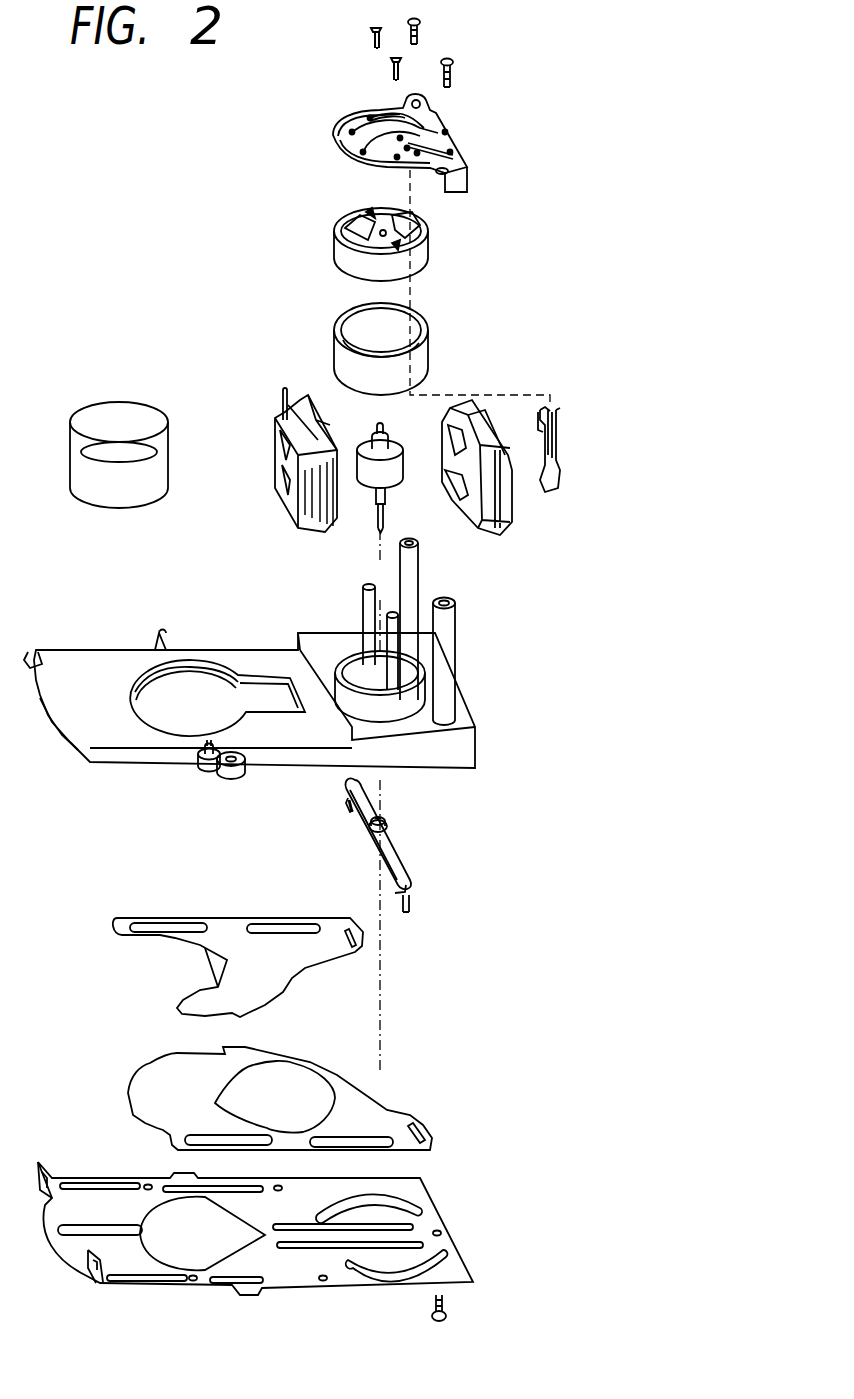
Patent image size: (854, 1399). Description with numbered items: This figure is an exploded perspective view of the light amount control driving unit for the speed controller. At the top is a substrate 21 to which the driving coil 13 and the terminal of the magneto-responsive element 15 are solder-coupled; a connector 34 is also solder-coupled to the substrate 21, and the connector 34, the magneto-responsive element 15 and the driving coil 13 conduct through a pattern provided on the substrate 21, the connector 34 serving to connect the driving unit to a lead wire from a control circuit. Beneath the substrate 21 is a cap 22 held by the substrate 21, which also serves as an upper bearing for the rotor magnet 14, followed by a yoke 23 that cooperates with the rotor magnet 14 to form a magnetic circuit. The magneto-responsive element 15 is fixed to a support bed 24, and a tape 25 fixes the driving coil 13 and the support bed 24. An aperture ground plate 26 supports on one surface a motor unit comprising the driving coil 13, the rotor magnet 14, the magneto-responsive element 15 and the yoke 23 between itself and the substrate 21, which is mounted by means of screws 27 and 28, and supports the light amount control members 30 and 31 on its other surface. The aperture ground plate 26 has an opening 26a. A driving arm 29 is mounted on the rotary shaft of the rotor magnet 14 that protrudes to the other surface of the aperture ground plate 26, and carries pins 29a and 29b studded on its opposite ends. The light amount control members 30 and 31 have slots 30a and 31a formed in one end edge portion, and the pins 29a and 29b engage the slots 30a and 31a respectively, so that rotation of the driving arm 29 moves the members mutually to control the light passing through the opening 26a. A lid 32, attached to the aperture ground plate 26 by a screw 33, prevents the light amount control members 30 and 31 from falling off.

The driving coil 13 is at (282, 412).
The rotor magnet 14 is at (402, 486).
The magneto-responsive element 15 is at (560, 486).
The substrate 21 is at (458, 140).
The cap 22 is at (430, 235).
The yoke 23 is at (430, 322).
The support bed 24 is at (486, 410).
The tape 25 is at (168, 452).
The aperture ground plate 26 is at (468, 726).
The opening 26a is at (185, 688).
The screw 27 is at (390, 62).
The screw 28 is at (447, 56).
The driving arm 29 is at (428, 838).
The pin 29a is at (346, 810).
The pin 29b is at (411, 905).
The light amount control member 30 is at (328, 955).
The slot 30a is at (356, 920).
The light amount control member 31 is at (390, 1125).
The slot 31a is at (426, 1133).
The lid 32 is at (428, 1220).
The screw 33 is at (445, 1308).
The connector 34 is at (465, 185).